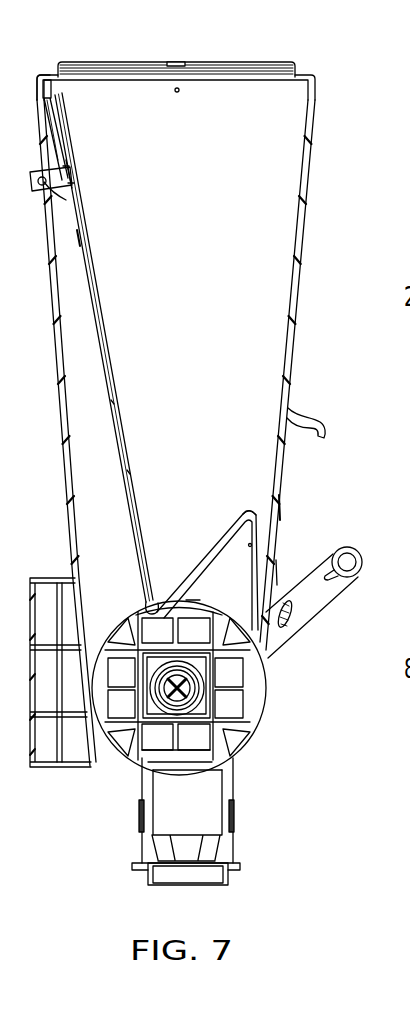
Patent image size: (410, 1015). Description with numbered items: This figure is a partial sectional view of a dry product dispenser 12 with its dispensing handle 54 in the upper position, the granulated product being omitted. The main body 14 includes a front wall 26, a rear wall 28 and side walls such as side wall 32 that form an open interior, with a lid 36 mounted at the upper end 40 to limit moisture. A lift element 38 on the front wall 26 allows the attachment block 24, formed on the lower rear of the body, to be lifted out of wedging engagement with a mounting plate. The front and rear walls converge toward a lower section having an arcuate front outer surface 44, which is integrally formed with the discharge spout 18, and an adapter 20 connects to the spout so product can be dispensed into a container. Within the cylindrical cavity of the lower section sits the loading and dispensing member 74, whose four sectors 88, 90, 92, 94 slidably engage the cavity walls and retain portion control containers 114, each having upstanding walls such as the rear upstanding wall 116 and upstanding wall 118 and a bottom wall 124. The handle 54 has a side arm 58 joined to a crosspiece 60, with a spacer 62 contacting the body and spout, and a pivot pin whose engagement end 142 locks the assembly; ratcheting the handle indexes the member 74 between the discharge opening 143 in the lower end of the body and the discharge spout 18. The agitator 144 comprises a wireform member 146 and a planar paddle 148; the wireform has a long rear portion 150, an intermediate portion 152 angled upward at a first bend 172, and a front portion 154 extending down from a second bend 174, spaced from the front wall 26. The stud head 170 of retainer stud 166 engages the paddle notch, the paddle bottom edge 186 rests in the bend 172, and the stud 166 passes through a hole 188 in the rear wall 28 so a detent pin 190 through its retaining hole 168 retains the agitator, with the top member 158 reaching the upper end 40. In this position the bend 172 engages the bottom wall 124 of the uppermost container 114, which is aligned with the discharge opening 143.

The dry product dispenser 12 is at (279, 35).
The main body 14 is at (315, 278).
The discharge spout 18 is at (233, 784).
The adapter 20 is at (242, 850).
The attachment block 24 is at (42, 578).
The front wall 26 is at (305, 204).
The rear wall 28 is at (52, 322).
The side wall 32 is at (244, 159).
The lid 36 is at (198, 62).
The lift element 38 is at (315, 418).
The upper end 40 is at (38, 97).
The arcuate front outer surface 44 is at (235, 736).
The dispensing handle 54 is at (362, 590).
The side arm 58 is at (310, 595).
The crosspiece 60 is at (356, 554).
The spacer 62 is at (290, 612).
The loading and dispensing member 74 is at (168, 782).
The sector 88 is at (110, 636).
The sector 90 is at (245, 636).
The sector 92 is at (245, 753).
The sector 94 is at (145, 722).
The portion control container 114 is at (195, 604).
The rear upstanding wall 116 is at (160, 654).
The upstanding wall 118 is at (205, 626).
The bottom wall 124 is at (277, 585).
The engagement end 142 is at (172, 692).
The discharge opening 143 is at (193, 580).
The agitator 144 is at (114, 332).
The wireform member 146 is at (84, 347).
The paddle 148 is at (100, 292).
The rear portion 150 is at (112, 413).
The intermediate portion 152 is at (232, 528).
The front portion 154 is at (284, 498).
The top member 158 is at (55, 97).
The retainer stud 166 is at (46, 172).
The retaining hole 168 is at (82, 244).
The stud head 170 is at (73, 178).
The first bend 172 is at (151, 604).
The second bend 174 is at (247, 506).
The bottom edge 186 is at (142, 598).
The hole 188 is at (48, 165).
The detent pin 190 is at (78, 206).